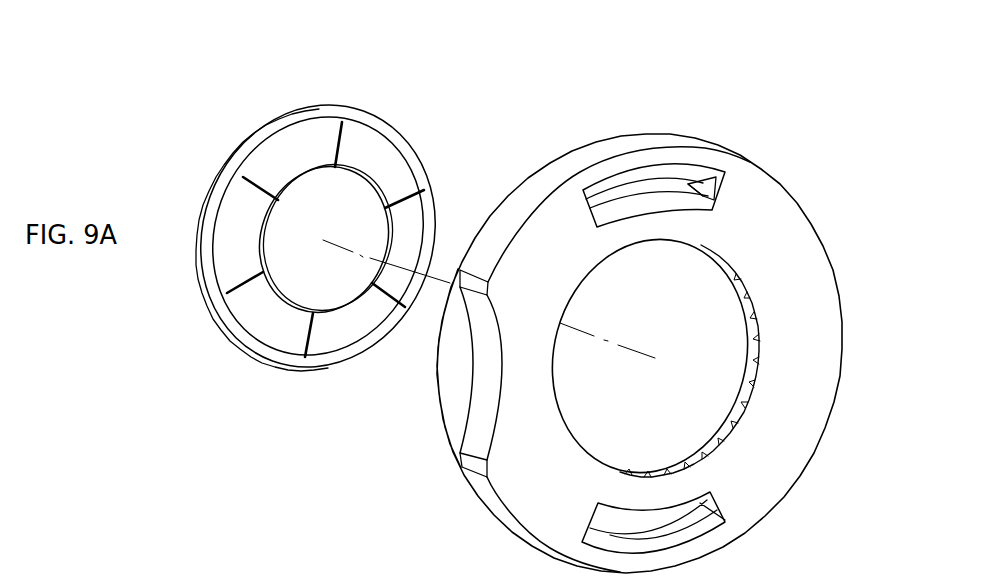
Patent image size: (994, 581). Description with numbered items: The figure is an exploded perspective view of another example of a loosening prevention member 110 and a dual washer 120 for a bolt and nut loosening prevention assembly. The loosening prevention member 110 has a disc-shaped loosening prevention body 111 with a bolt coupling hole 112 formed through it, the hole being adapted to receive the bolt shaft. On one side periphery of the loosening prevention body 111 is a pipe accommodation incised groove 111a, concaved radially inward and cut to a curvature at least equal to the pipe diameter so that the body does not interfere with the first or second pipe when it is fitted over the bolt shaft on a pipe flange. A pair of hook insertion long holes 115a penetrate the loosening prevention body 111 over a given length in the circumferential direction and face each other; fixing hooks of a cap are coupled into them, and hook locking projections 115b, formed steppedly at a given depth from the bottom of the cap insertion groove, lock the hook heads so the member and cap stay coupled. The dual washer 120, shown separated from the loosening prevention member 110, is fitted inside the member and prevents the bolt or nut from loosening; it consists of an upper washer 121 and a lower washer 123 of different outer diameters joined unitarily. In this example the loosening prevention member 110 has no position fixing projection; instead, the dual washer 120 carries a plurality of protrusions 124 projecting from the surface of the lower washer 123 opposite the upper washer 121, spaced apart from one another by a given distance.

The loosening prevention member 110 is at (788, 166).
The loosening prevention body 111 is at (800, 343).
The pipe accommodation incised groove 111a is at (485, 378).
The bolt coupling hole 112 is at (663, 397).
The hook insertion long holes 115a is at (660, 190).
The hook locking projections 115b is at (677, 172).
The dual washer 120 is at (415, 139).
The upper washer 121 is at (283, 113).
The lower washer 123 is at (381, 145).
The protrusions 124 is at (252, 284).